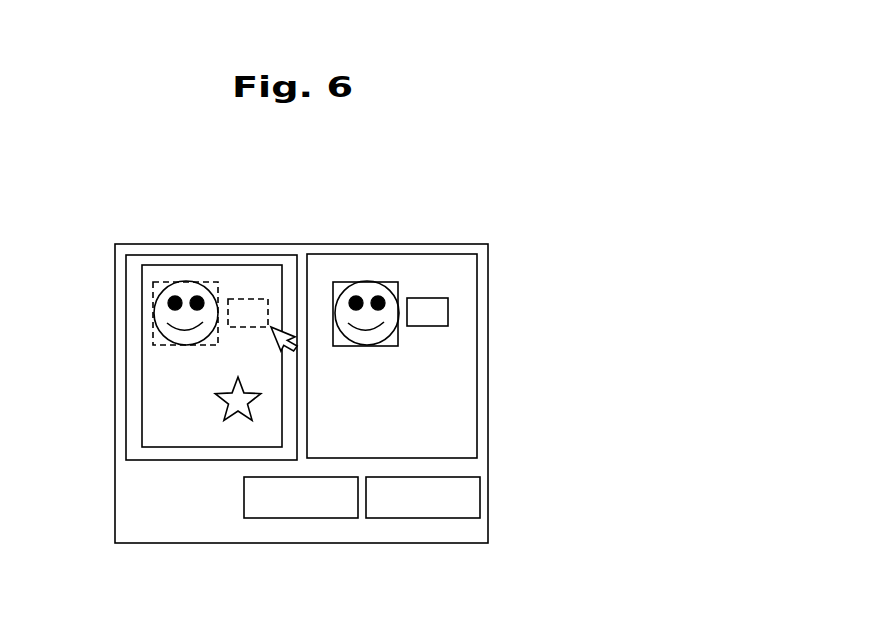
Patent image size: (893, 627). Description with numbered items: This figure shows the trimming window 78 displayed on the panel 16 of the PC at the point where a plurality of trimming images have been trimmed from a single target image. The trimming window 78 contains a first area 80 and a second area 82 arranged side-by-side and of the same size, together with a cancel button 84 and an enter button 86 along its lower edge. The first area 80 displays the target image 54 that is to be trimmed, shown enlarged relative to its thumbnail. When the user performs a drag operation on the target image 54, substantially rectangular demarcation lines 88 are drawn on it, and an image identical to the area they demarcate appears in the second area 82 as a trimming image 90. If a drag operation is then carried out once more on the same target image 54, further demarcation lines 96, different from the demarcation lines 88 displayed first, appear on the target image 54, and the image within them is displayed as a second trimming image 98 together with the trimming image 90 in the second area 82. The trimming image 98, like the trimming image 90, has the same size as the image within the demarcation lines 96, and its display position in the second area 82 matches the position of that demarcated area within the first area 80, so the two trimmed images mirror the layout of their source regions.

The panel 16 is at (418, 180).
The image 54 is at (193, 265).
The trimming window 78 is at (467, 245).
The first area 80 is at (147, 255).
The second area 82 is at (339, 254).
The cancel button 84 is at (332, 518).
The enter button 86 is at (458, 518).
The demarcation lines 88 is at (153, 291).
The trimming image 90 is at (383, 282).
The demarcation lines 96 is at (242, 299).
The trimming image 98 is at (426, 298).